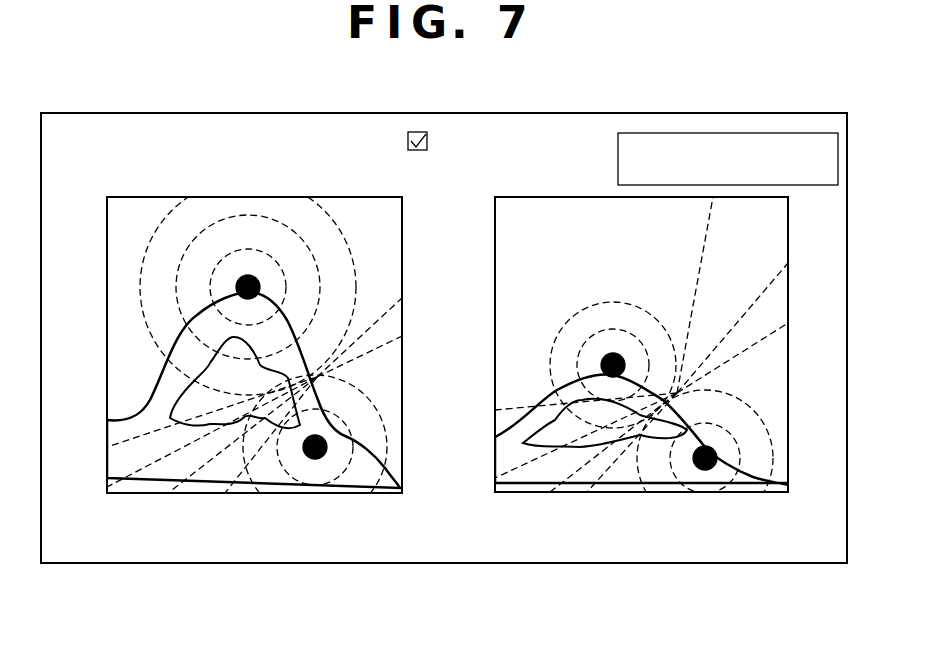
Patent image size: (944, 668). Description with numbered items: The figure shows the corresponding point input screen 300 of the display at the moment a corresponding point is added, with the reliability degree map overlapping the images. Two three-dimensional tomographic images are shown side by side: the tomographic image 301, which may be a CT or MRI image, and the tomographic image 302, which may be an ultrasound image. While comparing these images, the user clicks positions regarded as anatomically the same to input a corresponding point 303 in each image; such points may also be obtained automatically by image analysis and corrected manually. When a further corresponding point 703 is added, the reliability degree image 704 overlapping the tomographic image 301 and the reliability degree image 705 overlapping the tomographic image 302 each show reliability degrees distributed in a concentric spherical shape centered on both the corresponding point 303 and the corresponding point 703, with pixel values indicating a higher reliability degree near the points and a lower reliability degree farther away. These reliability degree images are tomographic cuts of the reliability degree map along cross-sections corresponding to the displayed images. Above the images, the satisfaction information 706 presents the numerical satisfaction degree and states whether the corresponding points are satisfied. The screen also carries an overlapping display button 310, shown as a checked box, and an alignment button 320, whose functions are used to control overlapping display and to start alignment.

The corresponding point input screen 300 is at (800, 563).
The tomographic image 301 is at (230, 493).
The tomographic image 302 is at (585, 492).
The corresponding point 303 is at (611, 355).
The overlapping display button 310 is at (506, 113).
The alignment button 320 is at (728, 133).
The corresponding point 703 is at (318, 458).
The reliability degree image 704 is at (172, 490).
The reliability degree image 705 is at (547, 492).
The satisfaction information 706 is at (181, 113).